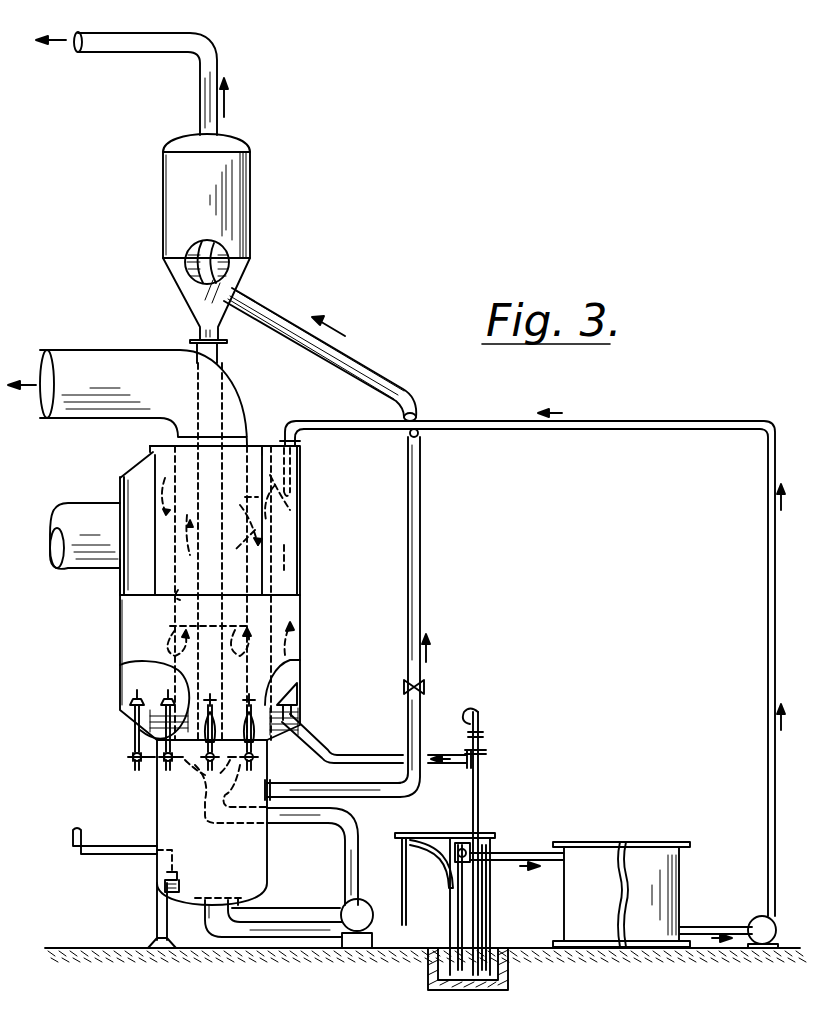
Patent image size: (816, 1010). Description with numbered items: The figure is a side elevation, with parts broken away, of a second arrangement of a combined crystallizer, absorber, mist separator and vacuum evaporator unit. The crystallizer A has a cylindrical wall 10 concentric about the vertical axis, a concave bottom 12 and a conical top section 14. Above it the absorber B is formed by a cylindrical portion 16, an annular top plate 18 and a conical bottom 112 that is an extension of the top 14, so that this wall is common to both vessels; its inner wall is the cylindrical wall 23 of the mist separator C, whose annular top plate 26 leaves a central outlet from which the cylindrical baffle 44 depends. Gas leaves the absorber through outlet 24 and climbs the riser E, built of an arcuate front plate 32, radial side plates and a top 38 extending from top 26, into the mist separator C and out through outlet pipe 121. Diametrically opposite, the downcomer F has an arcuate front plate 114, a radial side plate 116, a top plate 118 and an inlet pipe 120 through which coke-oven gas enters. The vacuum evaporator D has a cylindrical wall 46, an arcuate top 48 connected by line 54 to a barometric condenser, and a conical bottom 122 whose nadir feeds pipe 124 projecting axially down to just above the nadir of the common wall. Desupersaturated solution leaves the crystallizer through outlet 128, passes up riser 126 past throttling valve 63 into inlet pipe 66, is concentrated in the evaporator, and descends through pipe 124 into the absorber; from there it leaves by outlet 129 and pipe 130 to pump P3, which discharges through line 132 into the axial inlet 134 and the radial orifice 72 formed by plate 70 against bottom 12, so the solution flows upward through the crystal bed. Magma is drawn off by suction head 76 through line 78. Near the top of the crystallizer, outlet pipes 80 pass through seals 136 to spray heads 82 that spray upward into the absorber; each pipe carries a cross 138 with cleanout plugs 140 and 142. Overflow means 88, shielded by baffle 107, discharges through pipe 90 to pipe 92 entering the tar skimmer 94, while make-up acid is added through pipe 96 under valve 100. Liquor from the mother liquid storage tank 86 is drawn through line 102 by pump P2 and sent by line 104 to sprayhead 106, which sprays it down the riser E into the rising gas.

The cylindrical wall 10 is at (268, 844).
The concave bottom 12 is at (245, 898).
The conical top section 14 is at (234, 778).
The cylindrical portion 16 is at (304, 629).
The annular top plate 18 is at (187, 583).
The cylindrical portion 23 is at (154, 452).
The outlet 24 is at (122, 673).
The annular top plate 26 is at (252, 444).
The arcuate outer plate 32 is at (304, 529).
The top 38 is at (275, 445).
The cylindrical member 44 is at (226, 641).
The cylindrical wall 46 is at (252, 168).
The arcuate top 48 is at (236, 137).
The line 54 is at (166, 34).
The throttling valve 63 is at (422, 691).
The inlet pipe 66 is at (232, 268).
The plate 70 is at (211, 897).
The radial orifice 72 is at (243, 896).
The suction head 76 is at (165, 879).
The line 78 is at (123, 849).
The outlet pipes 80 is at (133, 743).
The spray heads 82 is at (132, 703).
The mother liquid storage tank 86 is at (672, 845).
The overflow means 88 is at (294, 712).
The pipe 90 is at (328, 751).
The pipe 92 is at (480, 781).
The tar skimmer 94 is at (493, 891).
The pipe 96 is at (481, 739).
The valve 100 is at (478, 713).
The line 102 is at (709, 927).
The line 104 is at (768, 636).
The sprayhead 106 is at (300, 493).
The baffle 107 is at (296, 689).
The conical bottom 112 is at (126, 714).
The arcuate front plate 114 is at (120, 585).
The radial side plate 116 is at (126, 488).
The top plate 118 is at (138, 473).
The inlet pipe 120 is at (74, 508).
The outlet pipe 121 is at (120, 360).
The conical bottom 122 is at (178, 296).
The pipe 124 is at (222, 341).
The riser 126 is at (418, 537).
The outlet 128 is at (271, 784).
The outlet 129 is at (215, 796).
The pipe 130 is at (218, 836).
The line 132 is at (290, 930).
The axial inlet 134 is at (211, 906).
The seals 136 is at (131, 723).
The cross 138 is at (130, 763).
The cleanout plug 140 is at (130, 758).
The cleanout plug 142 is at (150, 768).
The crystallizer A is at (160, 804).
The absorber B is at (122, 646).
The mist separator C is at (299, 519).
The vacuum evaporator D is at (242, 191).
The riser E is at (299, 548).
The downcomer F is at (128, 488).
The pump P2 is at (762, 916).
The pump P3 is at (344, 905).